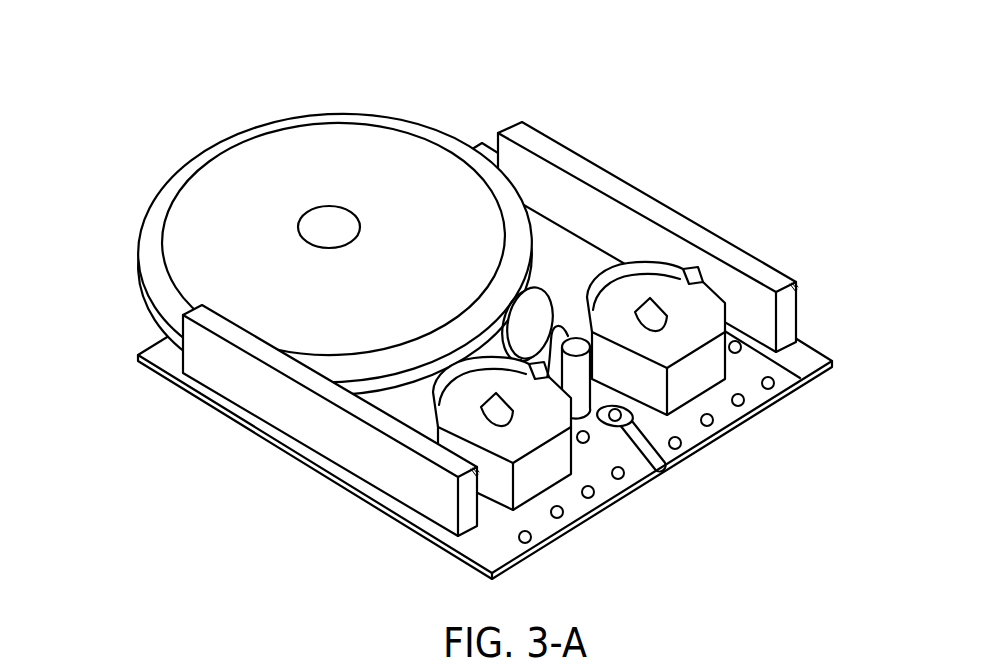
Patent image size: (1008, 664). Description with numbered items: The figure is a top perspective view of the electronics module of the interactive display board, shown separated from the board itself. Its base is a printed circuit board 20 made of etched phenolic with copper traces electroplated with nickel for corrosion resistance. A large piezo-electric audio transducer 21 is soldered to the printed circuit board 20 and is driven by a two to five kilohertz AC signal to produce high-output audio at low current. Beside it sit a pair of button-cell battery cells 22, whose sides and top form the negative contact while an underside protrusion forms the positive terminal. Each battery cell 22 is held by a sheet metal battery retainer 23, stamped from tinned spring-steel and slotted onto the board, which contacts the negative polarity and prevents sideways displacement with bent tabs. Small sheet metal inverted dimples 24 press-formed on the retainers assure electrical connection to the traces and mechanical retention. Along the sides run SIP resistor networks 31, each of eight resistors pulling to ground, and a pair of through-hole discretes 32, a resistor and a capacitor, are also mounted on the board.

The printed circuit board 20 is at (178, 367).
The piezo-electric audio transducer 21 is at (313, 180).
The battery cell 22 is at (628, 372).
The sheet metal battery retainer 23 is at (675, 340).
The sheet metal inverted dimple 24 is at (748, 400).
The SIP resistor network 31 is at (542, 140).
The through-hole discretes 32 is at (553, 313).